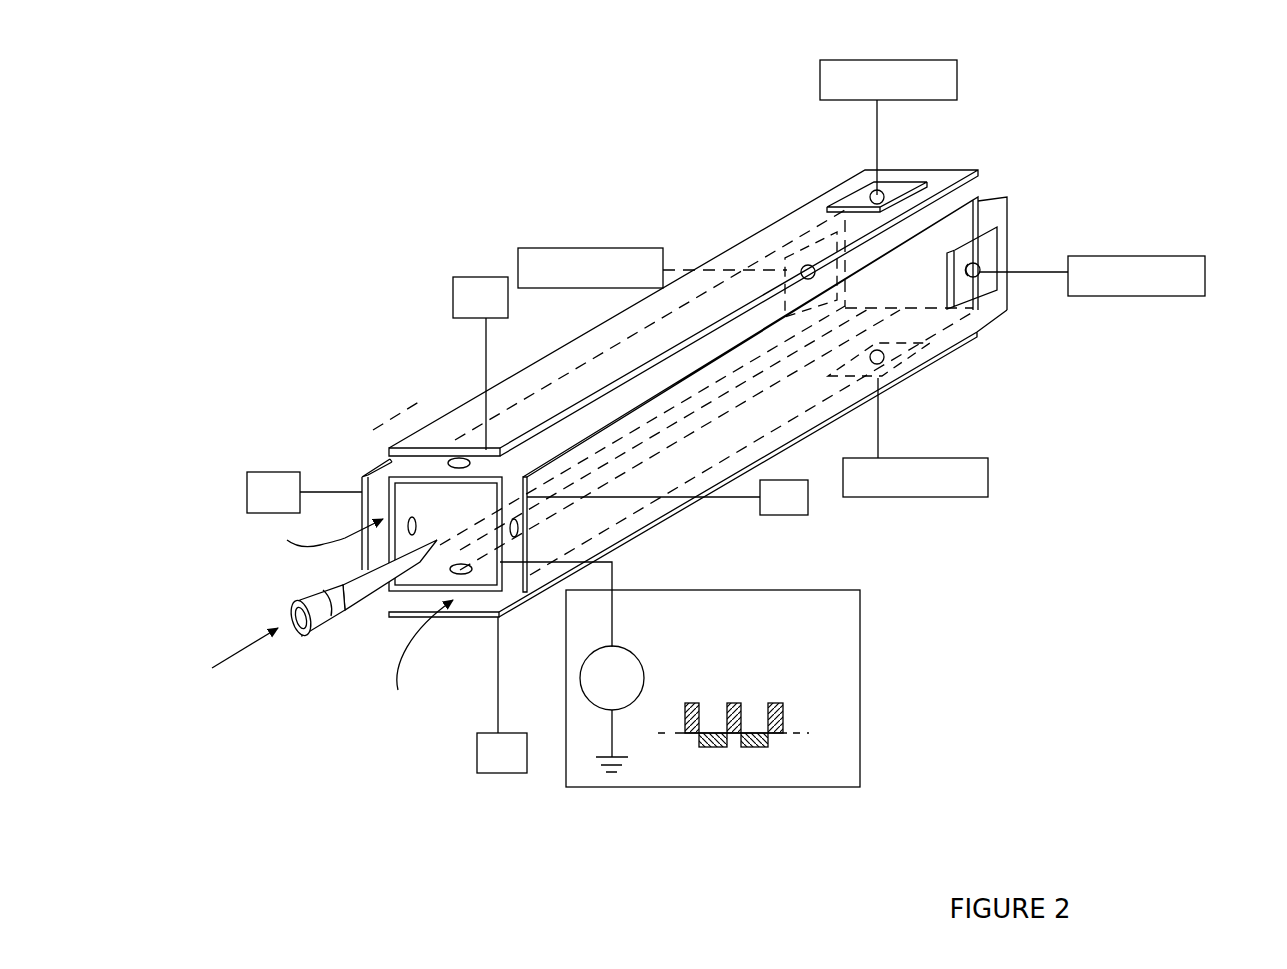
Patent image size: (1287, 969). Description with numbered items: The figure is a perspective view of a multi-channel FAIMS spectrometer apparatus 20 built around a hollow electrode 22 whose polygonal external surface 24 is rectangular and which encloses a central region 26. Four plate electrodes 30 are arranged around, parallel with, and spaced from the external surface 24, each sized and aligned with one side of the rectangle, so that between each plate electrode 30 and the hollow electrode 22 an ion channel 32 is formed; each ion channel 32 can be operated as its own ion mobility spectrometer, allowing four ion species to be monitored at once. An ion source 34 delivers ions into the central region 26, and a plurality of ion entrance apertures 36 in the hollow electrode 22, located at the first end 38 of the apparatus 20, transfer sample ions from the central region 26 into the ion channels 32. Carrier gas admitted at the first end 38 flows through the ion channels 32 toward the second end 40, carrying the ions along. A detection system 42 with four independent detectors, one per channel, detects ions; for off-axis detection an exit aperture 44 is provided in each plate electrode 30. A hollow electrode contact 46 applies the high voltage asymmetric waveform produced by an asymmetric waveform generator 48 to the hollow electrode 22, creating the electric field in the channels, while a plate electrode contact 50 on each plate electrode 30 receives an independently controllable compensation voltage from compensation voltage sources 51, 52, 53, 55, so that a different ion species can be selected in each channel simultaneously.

The apparatus 20 is at (1162, 130).
The hollow electrode 22 is at (410, 590).
The polygonal external surface 24 is at (420, 475).
The central region 26 is at (413, 507).
The plate electrode 30 is at (753, 268).
The ion channel 32 is at (484, 608).
The ion source 34 is at (306, 641).
The ion entrance aperture 36 is at (404, 531).
The first end 38 is at (330, 492).
The second end 40 is at (940, 170).
The detection system 42 is at (977, 294).
The exit aperture 44 is at (982, 262).
The hollow electrode contact 46 is at (632, 562).
The asymmetric waveform generator 48 is at (864, 694).
The plate electrode contact 50 is at (312, 479).
The compensation voltage source 51 is at (455, 278).
The compensation voltage source 52 is at (812, 505).
The compensation voltage source 53 is at (520, 773).
The compensation voltage source 55 is at (247, 488).